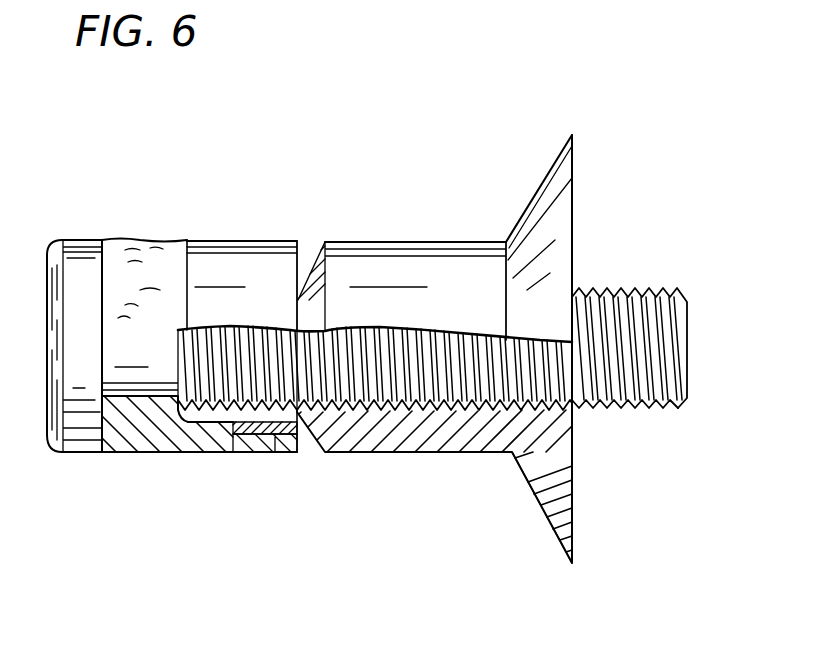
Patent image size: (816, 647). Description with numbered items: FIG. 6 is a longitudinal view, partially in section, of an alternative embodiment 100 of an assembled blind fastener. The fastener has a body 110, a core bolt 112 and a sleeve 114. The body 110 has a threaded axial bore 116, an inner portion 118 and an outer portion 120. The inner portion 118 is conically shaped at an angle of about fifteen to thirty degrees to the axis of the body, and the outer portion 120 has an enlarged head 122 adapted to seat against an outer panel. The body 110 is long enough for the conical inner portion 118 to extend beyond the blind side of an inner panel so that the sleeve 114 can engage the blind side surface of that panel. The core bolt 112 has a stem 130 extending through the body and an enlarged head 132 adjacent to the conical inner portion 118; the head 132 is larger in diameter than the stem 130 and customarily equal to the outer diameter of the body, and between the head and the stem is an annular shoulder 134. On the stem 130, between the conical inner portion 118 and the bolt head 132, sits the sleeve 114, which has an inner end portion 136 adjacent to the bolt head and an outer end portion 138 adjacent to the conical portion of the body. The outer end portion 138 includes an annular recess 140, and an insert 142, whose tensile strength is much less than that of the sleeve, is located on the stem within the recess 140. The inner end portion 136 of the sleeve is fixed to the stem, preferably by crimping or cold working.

The blind fastener embodiment 100 is at (407, 188).
The body 110 is at (445, 455).
The core bolt 112 is at (642, 312).
The sleeve 114 is at (223, 240).
The threaded axial bore 116 is at (487, 405).
The inner portion 118 is at (322, 453).
The outer portion 120 is at (590, 478).
The enlarged head 122 is at (567, 185).
The stem 130 is at (412, 405).
The enlarged head 132 is at (76, 448).
The annular shoulder 134 is at (107, 447).
The inner end portion 136 is at (152, 238).
The outer end portion 138 is at (293, 240).
The annular recess 140 is at (250, 447).
The insert 142 is at (282, 440).